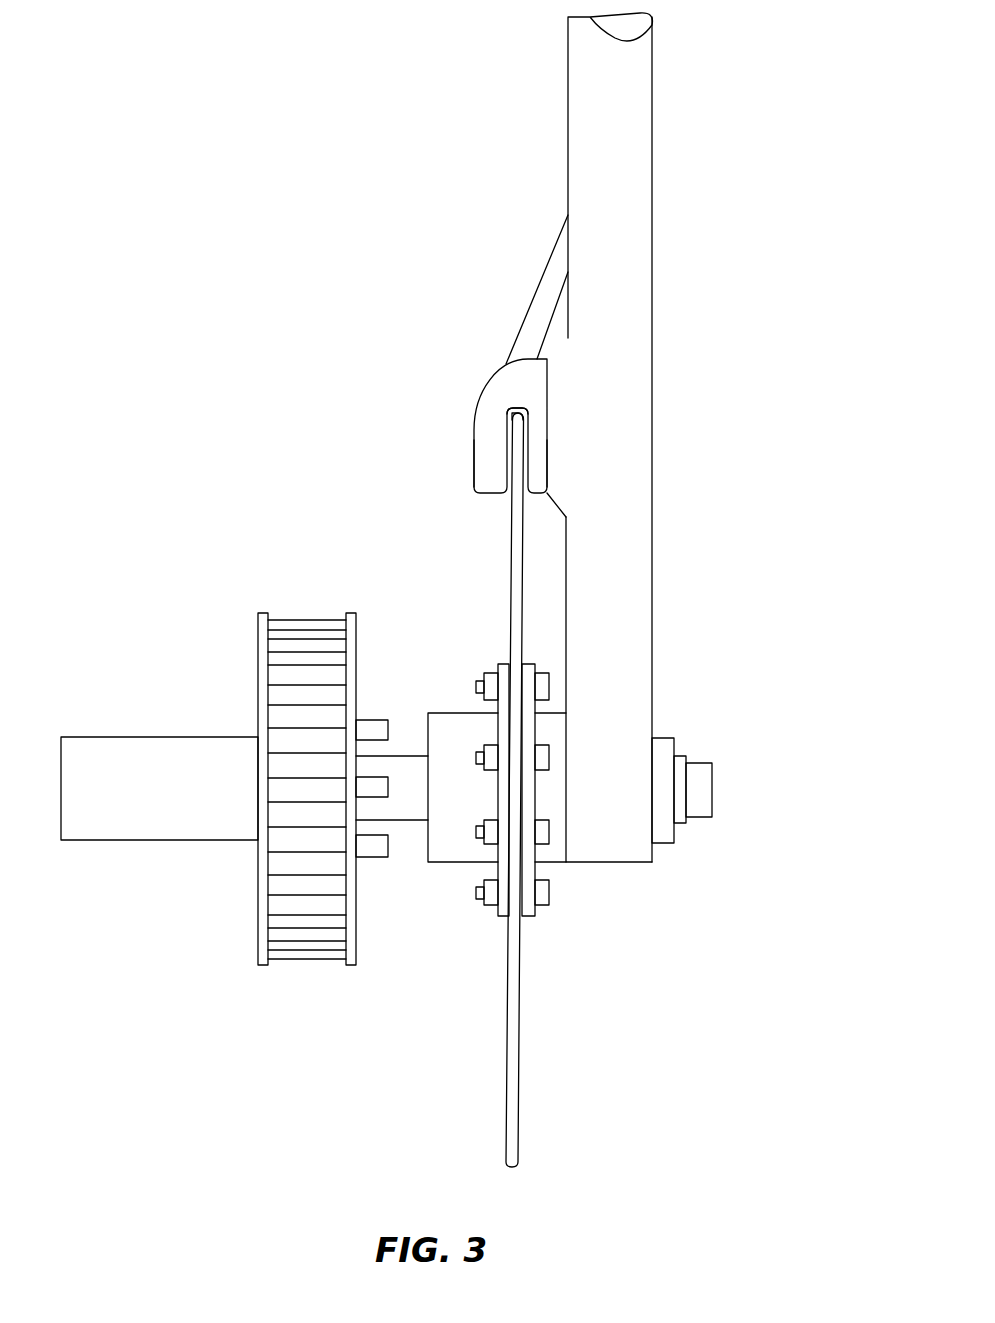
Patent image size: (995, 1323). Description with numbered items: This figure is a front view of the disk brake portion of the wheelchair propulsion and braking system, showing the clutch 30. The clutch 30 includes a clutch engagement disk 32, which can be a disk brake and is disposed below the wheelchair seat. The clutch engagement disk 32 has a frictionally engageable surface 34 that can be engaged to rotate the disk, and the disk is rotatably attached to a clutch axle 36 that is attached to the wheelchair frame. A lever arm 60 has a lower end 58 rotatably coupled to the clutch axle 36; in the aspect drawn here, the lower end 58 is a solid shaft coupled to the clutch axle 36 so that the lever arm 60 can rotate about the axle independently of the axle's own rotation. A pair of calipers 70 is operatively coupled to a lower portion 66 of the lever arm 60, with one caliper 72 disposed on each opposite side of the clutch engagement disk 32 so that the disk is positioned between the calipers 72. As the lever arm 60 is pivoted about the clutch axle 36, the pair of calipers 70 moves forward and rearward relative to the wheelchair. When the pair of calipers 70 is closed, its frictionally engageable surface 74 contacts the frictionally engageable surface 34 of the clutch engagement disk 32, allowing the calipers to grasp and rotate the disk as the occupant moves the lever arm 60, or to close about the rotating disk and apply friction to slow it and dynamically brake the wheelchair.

The clutch 30 is at (318, 313).
The clutch engagement disk 32 is at (512, 1023).
The frictionally engageable surface 34 is at (512, 462).
The clutch axle 36 is at (695, 796).
The lower end of the lever arm 58 is at (625, 692).
The lever arm 60 is at (635, 80).
The lower portion of the lever arm 66 is at (569, 375).
The pair of calipers 70 is at (470, 387).
The caliper 72 is at (488, 483).
The frictionally engageable surface of the calipers 74 is at (507, 442).